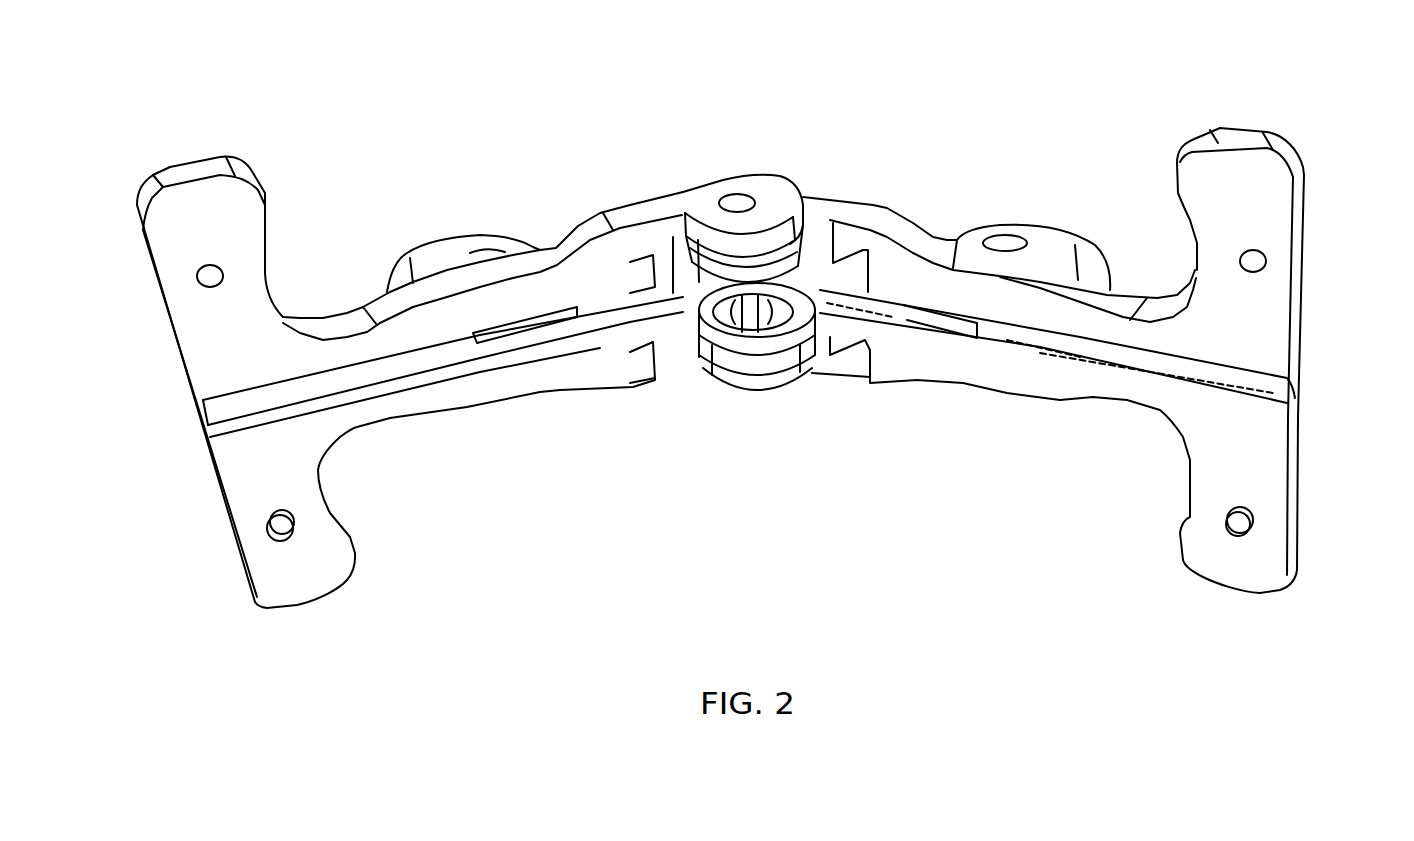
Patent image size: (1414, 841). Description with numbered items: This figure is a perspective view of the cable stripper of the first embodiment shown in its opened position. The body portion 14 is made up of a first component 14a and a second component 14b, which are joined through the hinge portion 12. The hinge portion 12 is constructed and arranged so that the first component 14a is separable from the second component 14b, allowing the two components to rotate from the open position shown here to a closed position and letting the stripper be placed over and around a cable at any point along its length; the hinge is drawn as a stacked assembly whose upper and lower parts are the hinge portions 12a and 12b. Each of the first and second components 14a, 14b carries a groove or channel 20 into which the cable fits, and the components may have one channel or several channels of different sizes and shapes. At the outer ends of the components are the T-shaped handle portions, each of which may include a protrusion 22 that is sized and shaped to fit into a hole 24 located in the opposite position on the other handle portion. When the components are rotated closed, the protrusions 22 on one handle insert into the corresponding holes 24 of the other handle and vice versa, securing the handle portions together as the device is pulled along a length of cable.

The hinge portion 12 is at (729, 246).
The hinge portion 12a is at (692, 272).
The hinge portion 12b is at (778, 190).
The body portion 14 is at (580, 226).
The first component 14a is at (540, 393).
The second component 14b is at (913, 383).
The groove or channel 20 is at (348, 373).
The protrusion 22 is at (278, 528).
The hole 24 is at (206, 278).